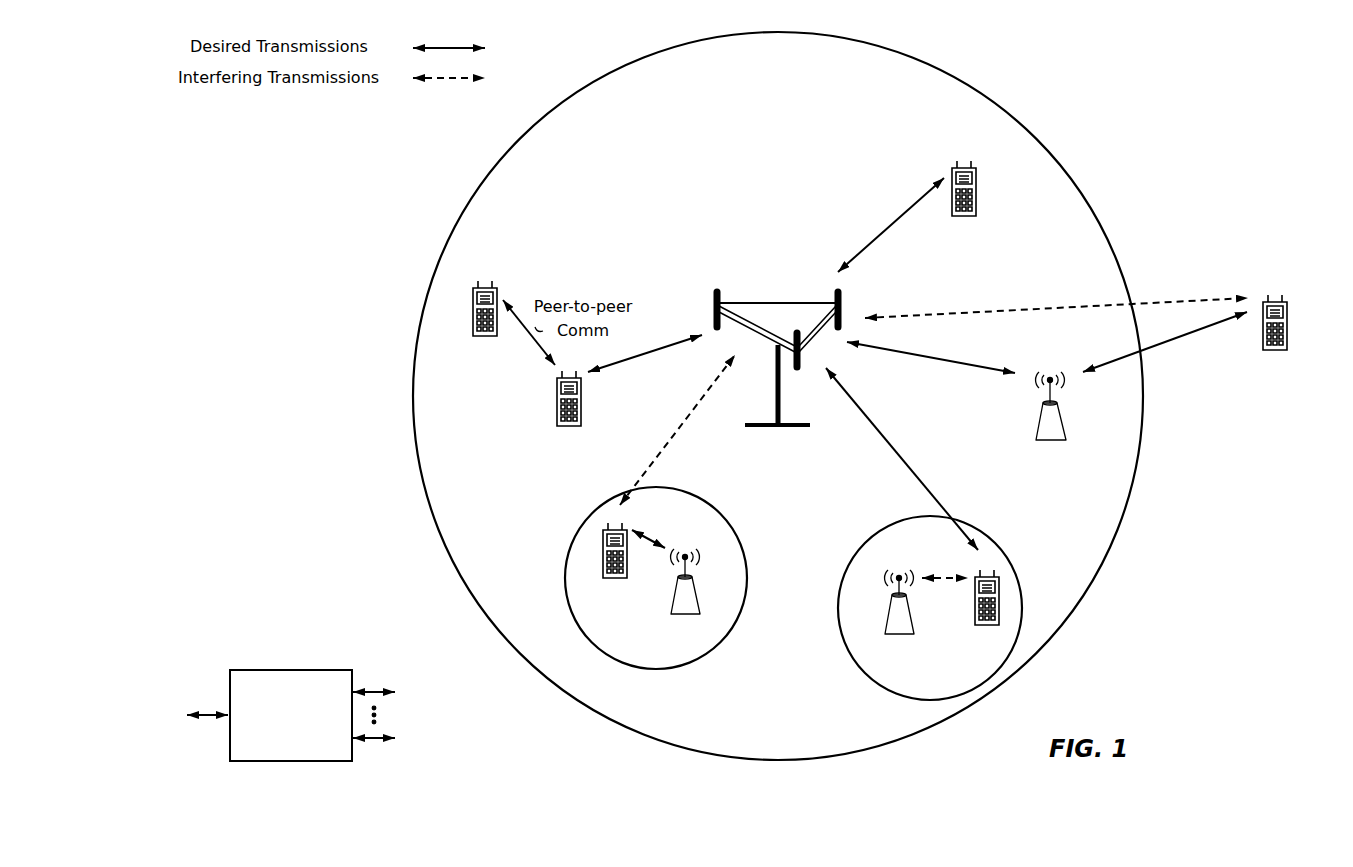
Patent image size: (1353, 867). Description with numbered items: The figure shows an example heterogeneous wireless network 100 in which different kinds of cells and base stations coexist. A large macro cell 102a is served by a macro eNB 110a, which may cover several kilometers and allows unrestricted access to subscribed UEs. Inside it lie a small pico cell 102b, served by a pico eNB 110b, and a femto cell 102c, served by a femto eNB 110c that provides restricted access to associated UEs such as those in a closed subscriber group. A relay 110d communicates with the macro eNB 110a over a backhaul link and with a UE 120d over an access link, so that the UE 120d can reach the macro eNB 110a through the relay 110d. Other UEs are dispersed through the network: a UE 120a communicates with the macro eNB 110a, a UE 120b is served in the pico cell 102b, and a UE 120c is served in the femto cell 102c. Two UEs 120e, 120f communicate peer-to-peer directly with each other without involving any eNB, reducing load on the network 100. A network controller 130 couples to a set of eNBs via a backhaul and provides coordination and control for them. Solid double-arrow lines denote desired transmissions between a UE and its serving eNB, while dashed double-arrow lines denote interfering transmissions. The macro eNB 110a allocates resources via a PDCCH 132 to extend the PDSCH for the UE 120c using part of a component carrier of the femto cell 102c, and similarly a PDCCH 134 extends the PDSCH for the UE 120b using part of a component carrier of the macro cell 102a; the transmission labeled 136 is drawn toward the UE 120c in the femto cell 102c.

The heterogeneous wireless network 100 is at (1207, 90).
The macro cell 102a is at (1020, 122).
The pico cell 102b is at (725, 517).
The femto cell 102c is at (860, 546).
The macro eNB 110a is at (774, 303).
The pico eNB 110b is at (702, 603).
The femto eNB 110c is at (884, 626).
The relay 110d is at (1052, 372).
The UE 120a is at (975, 175).
The UE 120b is at (603, 572).
The UE 120c is at (976, 620).
The UE 120d is at (1288, 312).
The UE 120e is at (557, 395).
The UE 120f is at (470, 298).
The network controller 130 is at (290, 670).
The PDCCH 132 is at (940, 412).
The PDCCH 134 is at (667, 502).
The PDCCH (X-PDSCH) transmission 136 is at (942, 530).